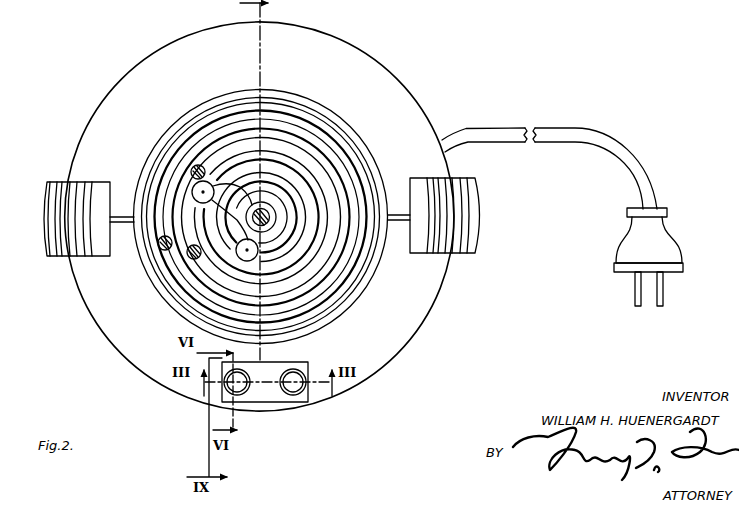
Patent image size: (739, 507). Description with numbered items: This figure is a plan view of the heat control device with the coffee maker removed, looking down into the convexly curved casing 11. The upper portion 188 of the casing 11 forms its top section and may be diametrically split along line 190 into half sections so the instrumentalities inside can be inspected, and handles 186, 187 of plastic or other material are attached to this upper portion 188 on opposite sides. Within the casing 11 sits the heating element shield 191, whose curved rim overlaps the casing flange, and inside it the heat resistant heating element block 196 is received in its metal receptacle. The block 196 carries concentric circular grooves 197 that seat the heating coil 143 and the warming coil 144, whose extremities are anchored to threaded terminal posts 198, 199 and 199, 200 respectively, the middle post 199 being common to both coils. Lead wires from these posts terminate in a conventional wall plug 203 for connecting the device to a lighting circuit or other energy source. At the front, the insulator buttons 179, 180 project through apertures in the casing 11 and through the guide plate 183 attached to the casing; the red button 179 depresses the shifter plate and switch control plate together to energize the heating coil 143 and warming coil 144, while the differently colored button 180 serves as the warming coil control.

The casing 11 is at (380, 93).
The heating coil 143 is at (293, 120).
The warming coil 144 is at (323, 168).
The insulator button 179 is at (232, 384).
The warming coil button 180 is at (298, 382).
The guide plate 183 is at (303, 362).
The handle 186 is at (60, 200).
The handle 187 is at (470, 193).
The upper portion 188 is at (438, 284).
The split line 190 is at (117, 223).
The heating element shield 191 is at (232, 95).
The heating element block 196 is at (340, 177).
The concentric circular grooves 197 is at (358, 180).
The threaded terminal post 198 is at (165, 243).
The threaded terminal post 199 is at (198, 172).
The threaded terminal post 200 is at (194, 252).
The wall plug 203 is at (662, 243).